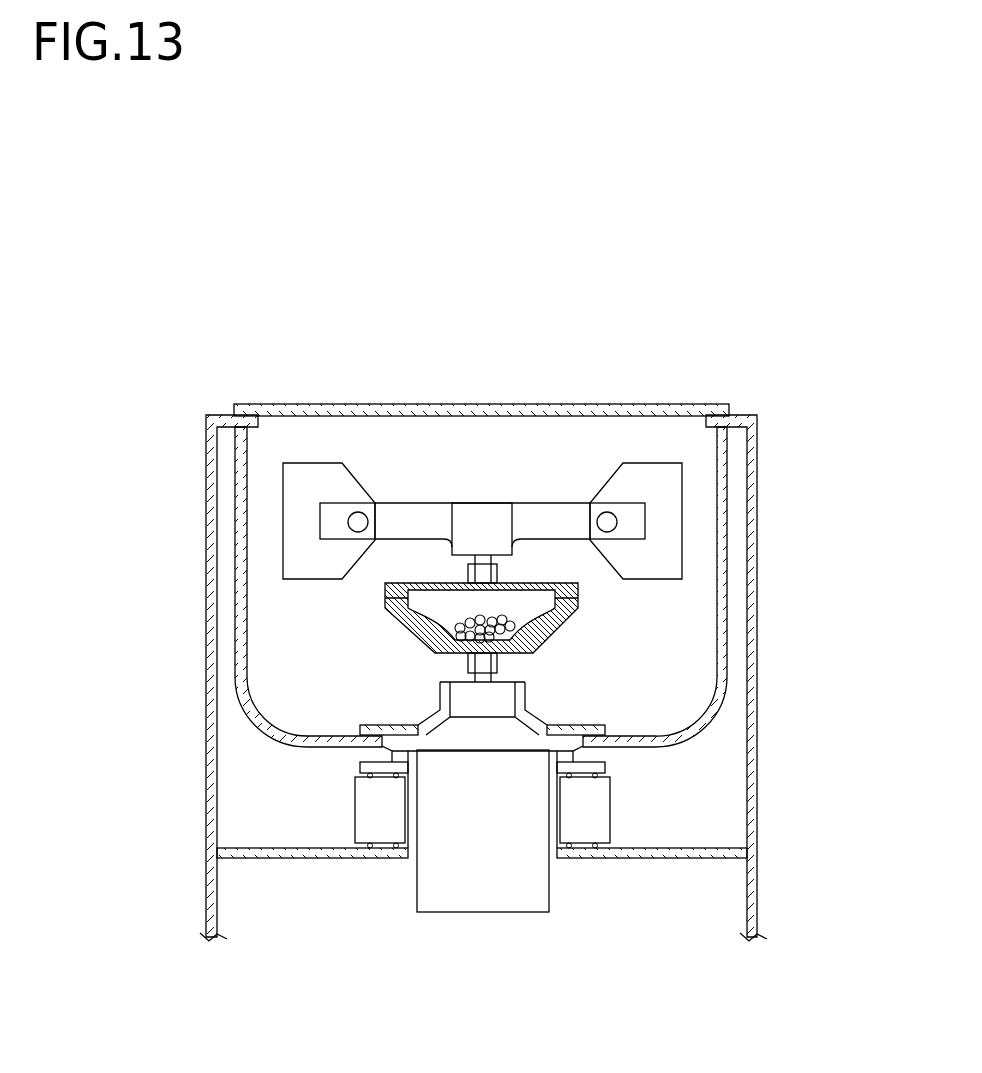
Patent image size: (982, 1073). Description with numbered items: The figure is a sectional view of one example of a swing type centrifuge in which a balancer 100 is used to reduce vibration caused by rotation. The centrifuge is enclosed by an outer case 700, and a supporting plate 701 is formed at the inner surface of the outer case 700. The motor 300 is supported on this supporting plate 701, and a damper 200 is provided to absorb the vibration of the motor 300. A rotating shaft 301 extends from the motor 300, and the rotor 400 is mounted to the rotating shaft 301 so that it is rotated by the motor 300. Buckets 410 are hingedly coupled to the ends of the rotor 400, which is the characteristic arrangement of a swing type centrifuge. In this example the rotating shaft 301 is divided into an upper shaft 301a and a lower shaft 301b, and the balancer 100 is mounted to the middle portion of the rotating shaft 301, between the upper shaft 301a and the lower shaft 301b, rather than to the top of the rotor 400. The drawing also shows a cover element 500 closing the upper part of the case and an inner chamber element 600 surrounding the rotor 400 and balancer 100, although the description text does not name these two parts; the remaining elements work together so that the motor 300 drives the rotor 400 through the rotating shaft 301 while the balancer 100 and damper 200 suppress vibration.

The balancer 100 is at (619, 621).
The damper 200 is at (377, 813).
The motor 300 is at (497, 870).
The rotating shaft 301 is at (130, 610).
The upper shaft 301a is at (485, 572).
The lower shaft 301b is at (485, 676).
The rotor 400 is at (534, 525).
The buckets 410 is at (636, 478).
The cover 500 is at (672, 404).
The inner chamber 600 is at (725, 695).
The outer case 700 is at (758, 784).
The supporting plate 701 is at (669, 859).